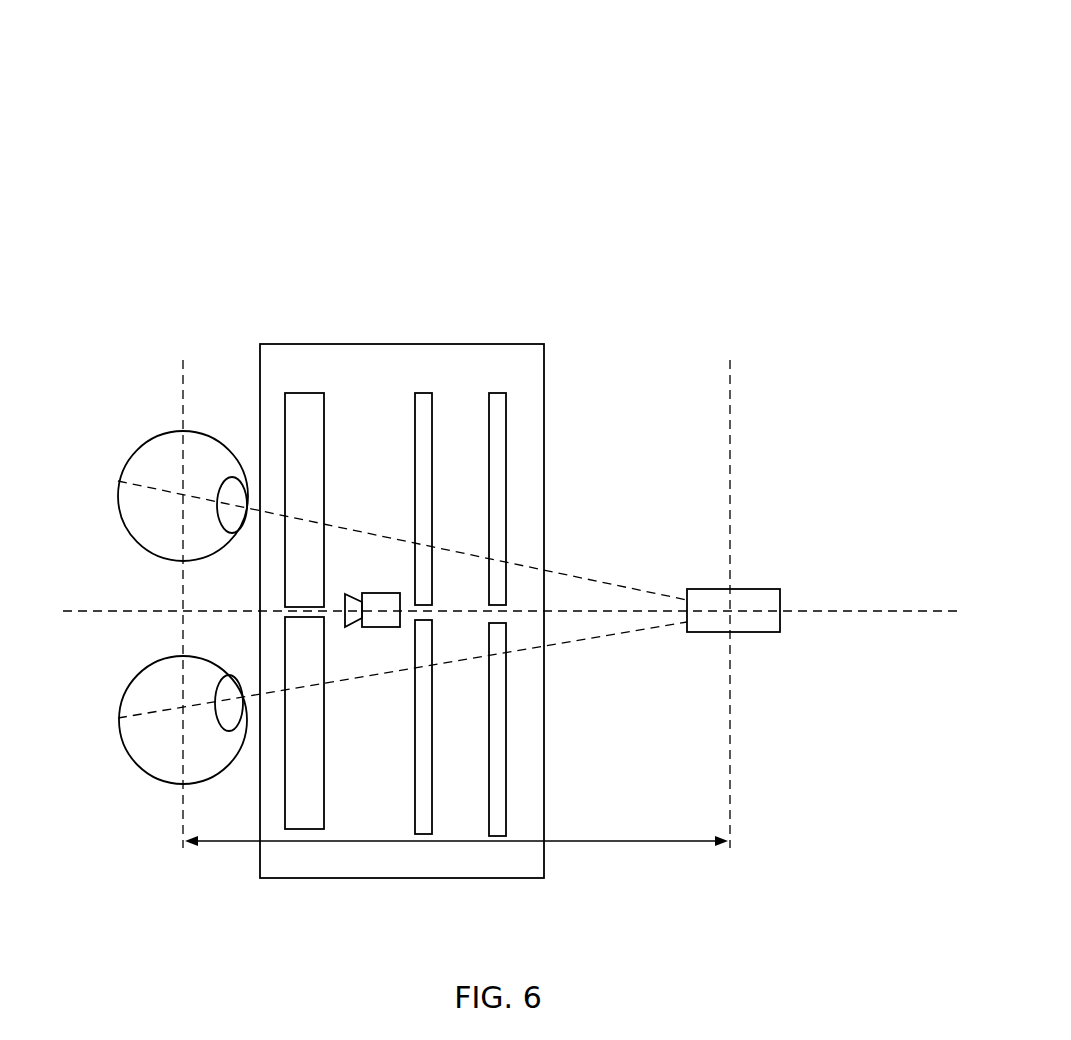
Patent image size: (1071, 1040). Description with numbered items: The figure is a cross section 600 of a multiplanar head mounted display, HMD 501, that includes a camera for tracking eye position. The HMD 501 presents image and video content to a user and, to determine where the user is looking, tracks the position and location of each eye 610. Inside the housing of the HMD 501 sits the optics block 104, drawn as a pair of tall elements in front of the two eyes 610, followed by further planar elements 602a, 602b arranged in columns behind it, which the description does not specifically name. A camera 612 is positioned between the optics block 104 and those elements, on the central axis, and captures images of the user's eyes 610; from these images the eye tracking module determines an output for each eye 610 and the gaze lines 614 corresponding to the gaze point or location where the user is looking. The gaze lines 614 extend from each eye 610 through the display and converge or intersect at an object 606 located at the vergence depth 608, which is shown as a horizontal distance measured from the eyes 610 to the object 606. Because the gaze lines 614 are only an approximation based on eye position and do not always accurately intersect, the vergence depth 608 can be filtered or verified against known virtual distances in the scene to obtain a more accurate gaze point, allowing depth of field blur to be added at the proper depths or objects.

The environment / system 600 is at (171, 75).
The HMD 501 is at (477, 343).
The optics block 104 is at (298, 403).
The first lens 602a is at (425, 392).
The second lens 602b is at (493, 391).
The camera 612 is at (377, 593).
The eye 610 is at (117, 504).
The gaze lines 614 is at (637, 630).
The object 606 is at (775, 589).
The vergence depth 608 is at (706, 840).